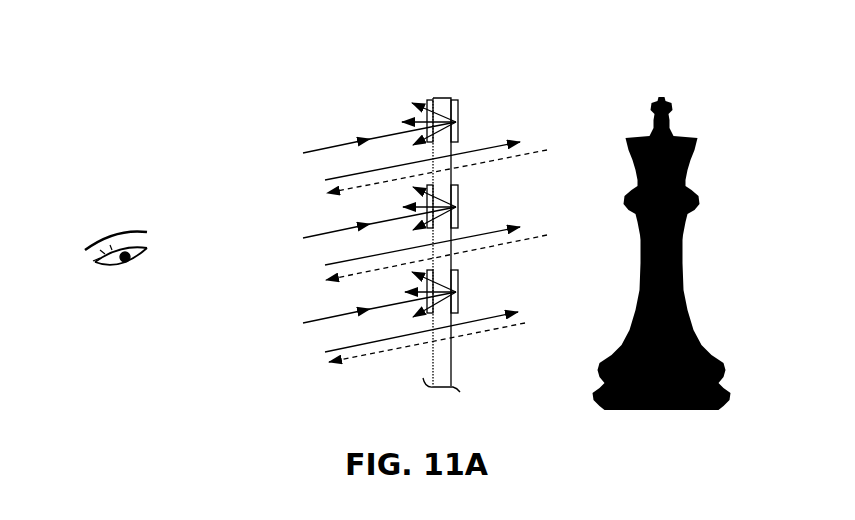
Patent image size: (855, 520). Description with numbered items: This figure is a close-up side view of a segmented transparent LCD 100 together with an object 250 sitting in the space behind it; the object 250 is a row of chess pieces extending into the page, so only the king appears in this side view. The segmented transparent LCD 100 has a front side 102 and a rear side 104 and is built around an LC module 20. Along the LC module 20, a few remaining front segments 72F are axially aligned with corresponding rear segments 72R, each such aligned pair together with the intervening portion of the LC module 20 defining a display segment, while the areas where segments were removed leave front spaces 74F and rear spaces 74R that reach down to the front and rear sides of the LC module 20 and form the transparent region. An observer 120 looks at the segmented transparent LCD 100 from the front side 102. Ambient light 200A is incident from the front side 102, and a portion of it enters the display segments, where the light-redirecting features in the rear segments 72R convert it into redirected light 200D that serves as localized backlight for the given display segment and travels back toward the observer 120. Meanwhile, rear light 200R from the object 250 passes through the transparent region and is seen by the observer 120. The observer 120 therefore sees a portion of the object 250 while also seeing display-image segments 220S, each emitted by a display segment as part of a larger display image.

The segmented transparent LCD 100 is at (308, 68).
The front side 102 is at (268, 345).
The rear side 104 is at (476, 368).
The observer 120 is at (108, 223).
The LC module 20 is at (441, 97).
The front segments 72F is at (424, 99).
The rear segments 72R is at (455, 98).
The front spaces 74F is at (430, 168).
The rear spaces 74R is at (459, 260).
The ambient light 200A is at (303, 152).
The redirected light 200D is at (446, 139).
The rear light 200R is at (539, 152).
The display-image segment 220S is at (393, 107).
The object 250 is at (712, 91).